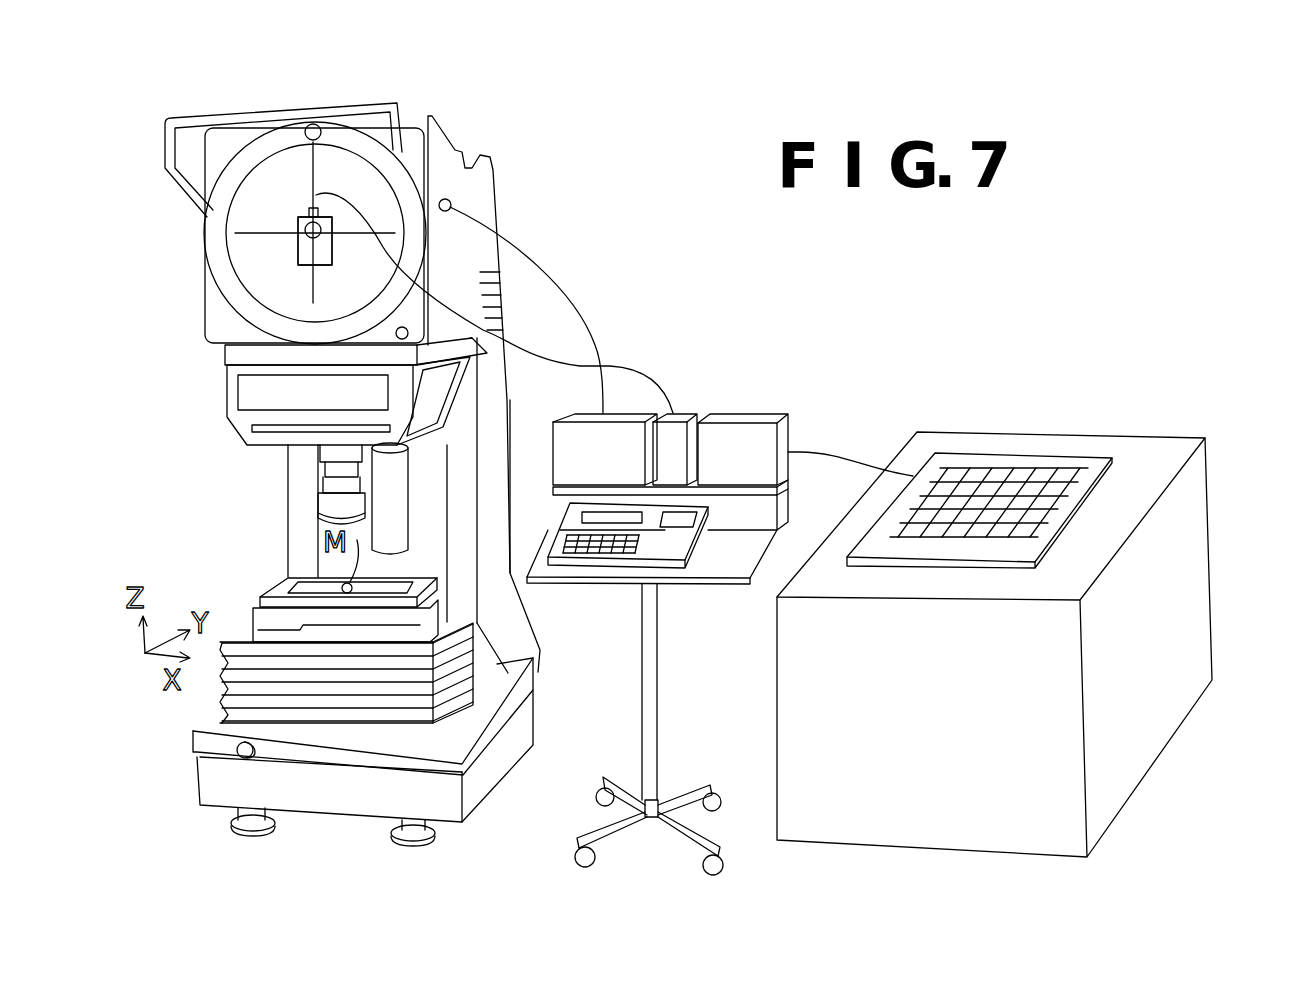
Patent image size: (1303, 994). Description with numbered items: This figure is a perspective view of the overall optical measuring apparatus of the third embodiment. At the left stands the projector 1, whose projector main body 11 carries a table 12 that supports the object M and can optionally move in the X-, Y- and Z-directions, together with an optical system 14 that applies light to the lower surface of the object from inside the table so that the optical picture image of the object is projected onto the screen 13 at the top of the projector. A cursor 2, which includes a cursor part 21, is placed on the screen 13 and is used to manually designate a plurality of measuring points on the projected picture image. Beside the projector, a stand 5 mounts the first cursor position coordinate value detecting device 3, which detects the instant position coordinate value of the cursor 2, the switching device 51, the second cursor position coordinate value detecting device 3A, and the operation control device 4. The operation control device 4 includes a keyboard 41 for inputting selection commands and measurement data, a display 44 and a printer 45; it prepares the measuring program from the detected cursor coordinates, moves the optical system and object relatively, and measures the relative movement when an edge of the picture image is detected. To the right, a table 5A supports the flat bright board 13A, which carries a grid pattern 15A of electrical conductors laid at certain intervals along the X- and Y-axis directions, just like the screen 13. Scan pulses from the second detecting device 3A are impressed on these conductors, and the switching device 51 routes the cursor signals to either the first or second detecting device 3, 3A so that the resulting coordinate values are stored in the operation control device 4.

The projector 1 is at (225, 395).
The cursor 2 is at (297, 260).
The cursor position coordinate value detecting device 3 is at (567, 448).
The second cursor position coordinate value detecting device 3A is at (773, 413).
The operation control device 4 is at (667, 550).
The stand 5 is at (655, 718).
The table 5A is at (1190, 630).
The projector main body 11 is at (293, 472).
The table 12 is at (292, 588).
The screen 13 is at (282, 162).
The bright board 13A is at (1095, 463).
The optical system 14 is at (330, 512).
The grid pattern 15A is at (1000, 468).
The cursor 21 is at (303, 267).
The keyboard 41 is at (593, 557).
The display 44 is at (567, 512).
The printer 45 is at (697, 523).
The switching device 51 is at (677, 413).